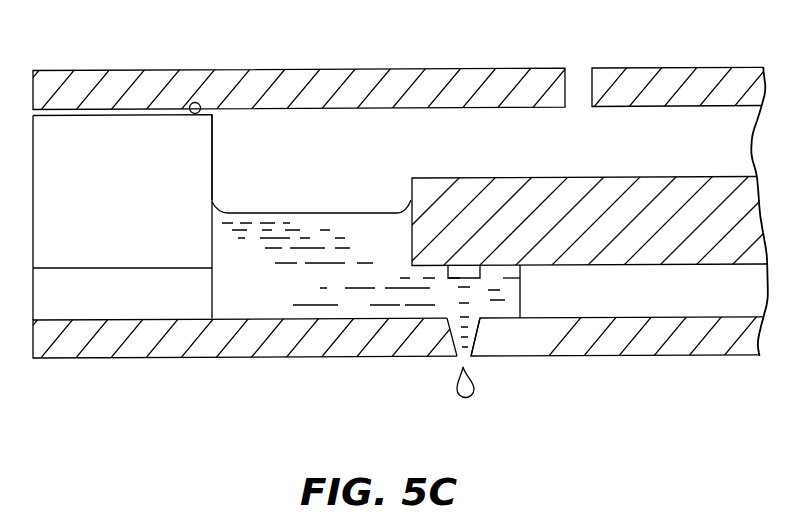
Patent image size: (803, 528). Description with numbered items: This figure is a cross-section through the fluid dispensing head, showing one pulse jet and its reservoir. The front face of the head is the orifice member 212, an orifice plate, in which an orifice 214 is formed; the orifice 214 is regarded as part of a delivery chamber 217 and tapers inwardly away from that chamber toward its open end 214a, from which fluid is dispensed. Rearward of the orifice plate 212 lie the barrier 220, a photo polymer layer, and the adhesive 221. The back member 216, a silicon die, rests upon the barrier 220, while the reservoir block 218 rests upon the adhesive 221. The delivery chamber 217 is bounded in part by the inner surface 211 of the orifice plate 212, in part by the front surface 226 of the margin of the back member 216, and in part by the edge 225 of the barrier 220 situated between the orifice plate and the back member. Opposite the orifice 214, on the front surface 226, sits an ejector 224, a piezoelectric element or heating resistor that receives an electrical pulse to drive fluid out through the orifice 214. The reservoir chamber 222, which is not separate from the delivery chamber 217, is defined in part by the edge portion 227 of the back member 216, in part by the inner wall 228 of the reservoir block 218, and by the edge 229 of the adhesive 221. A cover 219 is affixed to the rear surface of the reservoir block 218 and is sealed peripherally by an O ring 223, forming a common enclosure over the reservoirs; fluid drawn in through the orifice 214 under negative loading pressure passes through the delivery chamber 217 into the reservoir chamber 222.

The inner surface of the orifice plate 211 is at (423, 317).
The orifice member 212 is at (165, 340).
The orifice 214 is at (458, 340).
The open end of the orifice 214a is at (457, 363).
The back member 216 is at (465, 194).
The delivery chamber 217 is at (521, 275).
The reservoir block 218 is at (93, 130).
The cover 219 is at (430, 82).
The barrier 220 is at (593, 293).
The adhesive 221 is at (575, 82).
The reservoir chamber 222 is at (282, 302).
The O ring 223 is at (200, 104).
The ejector 224 is at (468, 272).
The edge of the photo polymer layer 225 is at (520, 290).
The front surface of the margin of the back member 226 is at (417, 266).
The edge portion of the back member 227 is at (411, 184).
The inner wall of the reservoir block 228 is at (212, 149).
The edge of the adhesive layer 229 is at (212, 288).